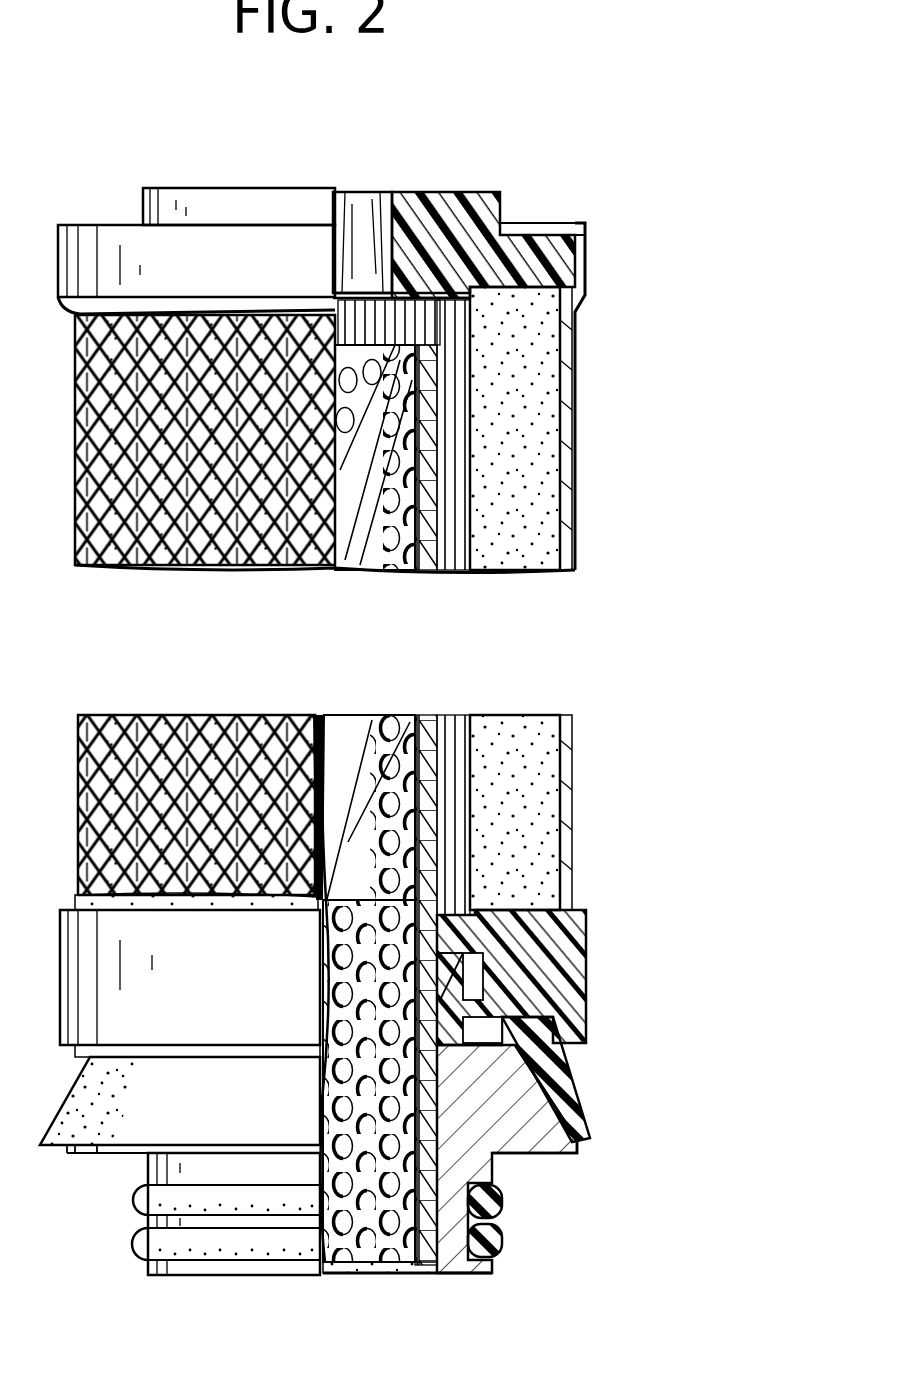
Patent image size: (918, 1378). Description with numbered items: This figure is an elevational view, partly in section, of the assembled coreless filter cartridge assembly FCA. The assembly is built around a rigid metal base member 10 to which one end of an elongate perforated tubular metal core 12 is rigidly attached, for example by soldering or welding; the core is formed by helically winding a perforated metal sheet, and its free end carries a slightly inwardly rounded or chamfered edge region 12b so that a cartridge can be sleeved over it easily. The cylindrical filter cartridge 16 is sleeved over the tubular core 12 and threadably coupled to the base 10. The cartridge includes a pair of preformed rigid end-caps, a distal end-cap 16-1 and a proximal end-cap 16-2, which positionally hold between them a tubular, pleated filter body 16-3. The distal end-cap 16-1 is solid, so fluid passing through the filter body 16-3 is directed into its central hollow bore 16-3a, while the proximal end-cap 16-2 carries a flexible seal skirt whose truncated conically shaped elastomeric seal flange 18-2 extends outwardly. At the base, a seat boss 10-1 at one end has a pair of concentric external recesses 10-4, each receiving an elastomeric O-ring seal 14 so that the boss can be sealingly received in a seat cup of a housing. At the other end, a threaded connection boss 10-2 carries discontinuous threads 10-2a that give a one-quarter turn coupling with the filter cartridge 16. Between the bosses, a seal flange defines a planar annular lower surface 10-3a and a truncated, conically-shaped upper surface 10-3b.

The filter cartridge assembly FCA is at (713, 182).
The filter cartridge 16 is at (598, 512).
The distal end-cap 16-1 is at (226, 268).
The proximal end-cap 16-2 is at (241, 1003).
The filter body 16-3 is at (183, 565).
The central hollow bore 16-3a is at (458, 565).
The tubular metal core 12 is at (390, 458).
The chamfered edge region 12b is at (565, 352).
The seal flange 18-2 is at (231, 1123).
The O-ring seals 14 is at (150, 1243).
The base member 10 is at (495, 1123).
The seat boss 10-1 is at (462, 1277).
The threaded connection boss 10-2 is at (572, 971).
The discontinuous threads 10-2a is at (483, 978).
The planar annular lower surface 10-3a is at (535, 1172).
The conically-shaped upper surface 10-3b is at (578, 1092).
The external recesses 10-4 is at (502, 1200).